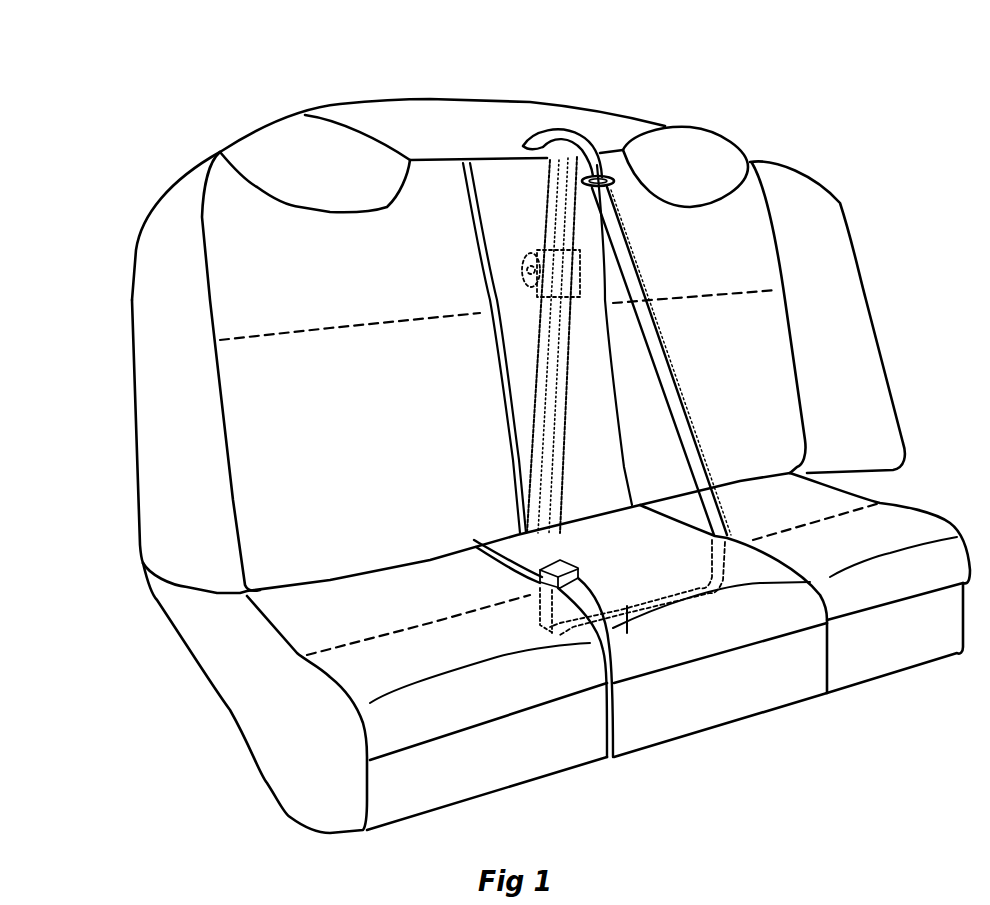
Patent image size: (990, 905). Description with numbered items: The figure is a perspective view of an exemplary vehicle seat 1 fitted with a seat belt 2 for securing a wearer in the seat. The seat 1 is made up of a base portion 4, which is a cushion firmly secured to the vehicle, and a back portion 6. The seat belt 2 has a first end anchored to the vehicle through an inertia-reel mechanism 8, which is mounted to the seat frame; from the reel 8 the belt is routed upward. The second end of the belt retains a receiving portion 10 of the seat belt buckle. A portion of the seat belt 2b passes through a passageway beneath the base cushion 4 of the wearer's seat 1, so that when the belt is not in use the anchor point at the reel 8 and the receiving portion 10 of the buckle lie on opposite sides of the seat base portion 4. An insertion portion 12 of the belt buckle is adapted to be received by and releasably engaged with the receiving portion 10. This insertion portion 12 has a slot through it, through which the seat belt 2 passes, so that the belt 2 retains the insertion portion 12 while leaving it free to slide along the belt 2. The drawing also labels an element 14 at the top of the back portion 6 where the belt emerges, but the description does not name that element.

The vehicle seat 1 is at (172, 140).
The seat belt 2 is at (668, 393).
The portion of the seat belt 2b is at (622, 666).
The base portion 4 is at (777, 620).
The back portion 6 is at (515, 340).
The inertia-reel mechanism 8 is at (525, 264).
The receiving portion of the seat belt buckle 10 is at (517, 575).
The insertion portion of the belt buckle 12 is at (618, 193).
The belt guide loop at top of backrest 14 is at (583, 140).